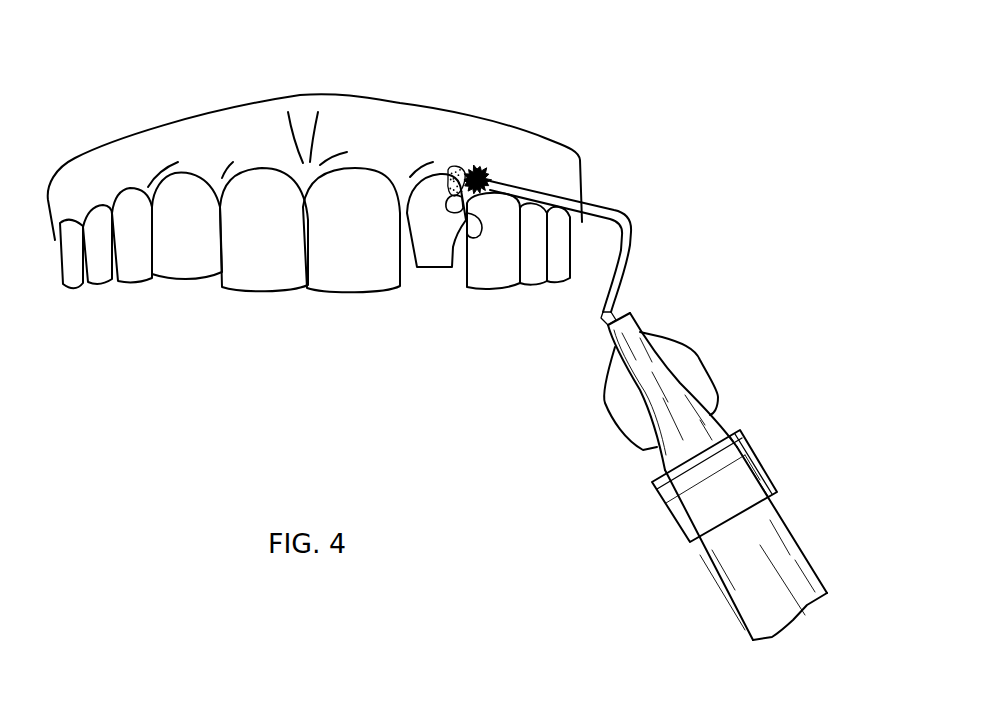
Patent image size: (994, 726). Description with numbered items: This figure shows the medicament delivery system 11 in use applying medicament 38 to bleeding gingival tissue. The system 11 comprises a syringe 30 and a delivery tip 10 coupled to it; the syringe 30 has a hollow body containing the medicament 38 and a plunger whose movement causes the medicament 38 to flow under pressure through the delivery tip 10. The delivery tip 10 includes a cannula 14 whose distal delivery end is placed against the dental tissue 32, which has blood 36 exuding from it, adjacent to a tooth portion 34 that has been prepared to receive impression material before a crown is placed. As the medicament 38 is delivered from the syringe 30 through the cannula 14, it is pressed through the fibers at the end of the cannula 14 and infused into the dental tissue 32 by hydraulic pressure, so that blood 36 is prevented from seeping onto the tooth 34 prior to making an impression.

The delivery tip 10 is at (740, 388).
The medicament delivery system 11 is at (779, 452).
The cannula 14 is at (643, 222).
The syringe 30 is at (820, 538).
The dental tissue 32 is at (472, 163).
The tooth portion 34 is at (432, 253).
The blood 36 is at (469, 233).
The medicament 38 is at (458, 167).